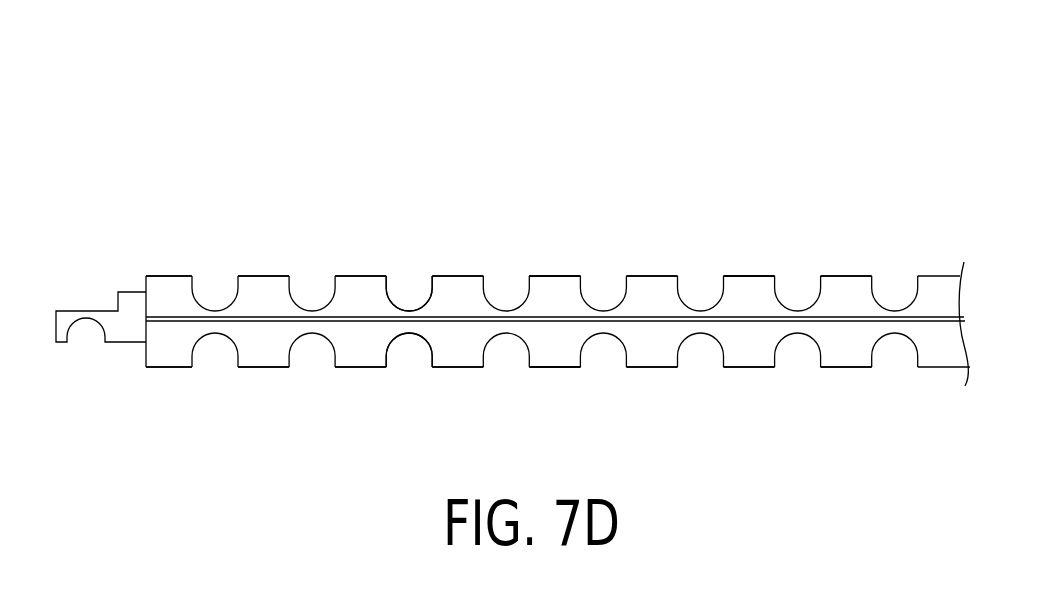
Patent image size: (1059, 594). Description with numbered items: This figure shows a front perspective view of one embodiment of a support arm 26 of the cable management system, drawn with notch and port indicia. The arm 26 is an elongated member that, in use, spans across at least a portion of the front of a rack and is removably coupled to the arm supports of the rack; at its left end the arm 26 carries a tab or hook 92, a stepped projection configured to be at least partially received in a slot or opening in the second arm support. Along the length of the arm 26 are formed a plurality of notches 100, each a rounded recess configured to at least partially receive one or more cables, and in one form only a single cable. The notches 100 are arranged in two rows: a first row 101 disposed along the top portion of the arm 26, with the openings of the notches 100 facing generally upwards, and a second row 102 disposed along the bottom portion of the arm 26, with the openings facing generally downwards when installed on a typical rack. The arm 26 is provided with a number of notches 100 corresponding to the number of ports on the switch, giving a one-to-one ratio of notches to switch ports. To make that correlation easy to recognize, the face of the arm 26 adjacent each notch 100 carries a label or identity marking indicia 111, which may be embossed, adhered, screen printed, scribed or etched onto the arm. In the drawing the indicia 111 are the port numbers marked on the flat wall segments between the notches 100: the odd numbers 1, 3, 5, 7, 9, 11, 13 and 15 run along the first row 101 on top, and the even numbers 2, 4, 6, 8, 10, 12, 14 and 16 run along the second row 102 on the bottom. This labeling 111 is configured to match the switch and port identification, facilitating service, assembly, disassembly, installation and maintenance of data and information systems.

The arm 26 is at (272, 120).
The tab or hook 92 is at (68, 310).
The first row 101 is at (160, 277).
The second row 102 is at (145, 367).
The notch 100 is at (408, 277).
The identity marking indicia 111 is at (557, 277).
The position 1 is at (169, 296).
The position 2 is at (169, 349).
The position 3 is at (263, 296).
The position 4 is at (263, 349).
The position 5 is at (360, 296).
The position 6 is at (360, 349).
The position 7 is at (457, 296).
The position 8 is at (457, 349).
The position 9 is at (554, 296).
The position 10 is at (554, 349).
The position 11 is at (651, 296).
The position 12 is at (651, 349).
The position 13 is at (749, 296).
The position 14 is at (749, 349).
The position 15 is at (846, 296).
The position 16 is at (846, 349).